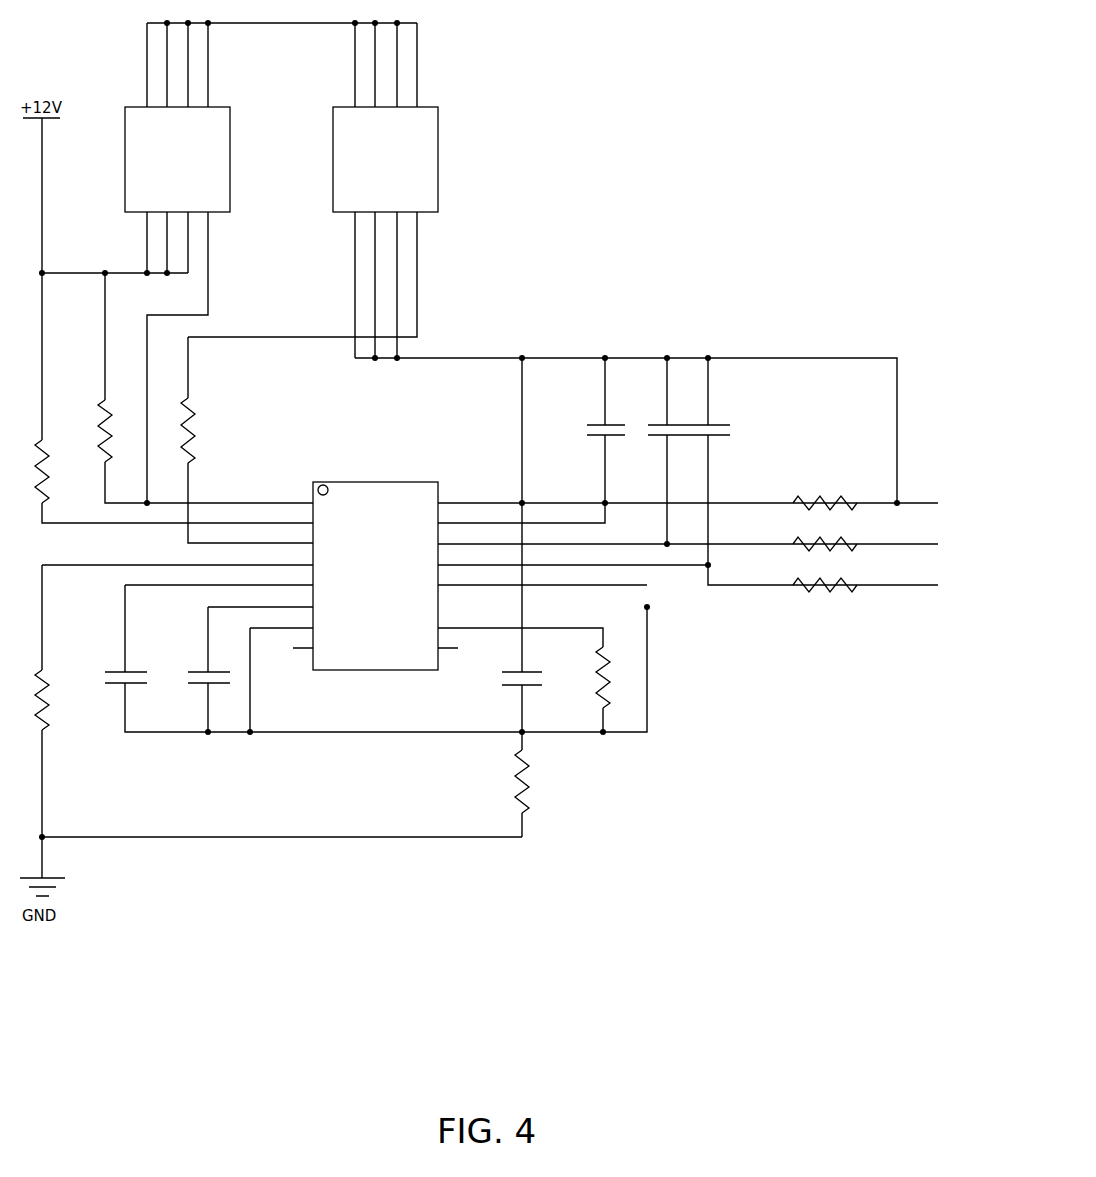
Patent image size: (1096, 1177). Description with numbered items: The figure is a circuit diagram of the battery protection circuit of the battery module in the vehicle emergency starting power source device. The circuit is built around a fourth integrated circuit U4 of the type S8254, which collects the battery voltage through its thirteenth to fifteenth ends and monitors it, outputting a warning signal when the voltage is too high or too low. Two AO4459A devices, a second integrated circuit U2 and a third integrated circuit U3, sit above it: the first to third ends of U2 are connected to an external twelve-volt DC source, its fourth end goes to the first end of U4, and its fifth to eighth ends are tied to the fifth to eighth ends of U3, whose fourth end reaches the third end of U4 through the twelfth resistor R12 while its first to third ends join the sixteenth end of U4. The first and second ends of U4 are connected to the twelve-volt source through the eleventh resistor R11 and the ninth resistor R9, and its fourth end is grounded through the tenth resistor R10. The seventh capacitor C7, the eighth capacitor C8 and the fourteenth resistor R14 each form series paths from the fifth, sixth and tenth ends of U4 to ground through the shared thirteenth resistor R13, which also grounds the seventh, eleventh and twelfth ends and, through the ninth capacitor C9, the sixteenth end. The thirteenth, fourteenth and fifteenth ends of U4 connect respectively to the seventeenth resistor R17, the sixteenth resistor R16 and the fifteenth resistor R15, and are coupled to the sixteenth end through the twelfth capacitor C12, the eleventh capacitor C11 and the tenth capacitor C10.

The second integrated circuit U2 is at (174, 151).
The third integrated circuit U3 is at (381, 151).
The fourth integrated circuit U4 is at (375, 566).
The ninth resistor R9 is at (51, 471).
The tenth resistor R10 is at (56, 700).
The eleventh resistor R11 is at (119, 431).
The twelfth resistor R12 is at (202, 430).
The thirteenth resistor R13 is at (539, 781).
The fourteenth resistor R14 is at (588, 677).
The fifteenth resistor R15 is at (825, 493).
The sixteenth resistor R16 is at (825, 535).
The seventeenth resistor R17 is at (825, 576).
The seventh capacitor C7 is at (126, 669).
The eighth capacitor C8 is at (209, 669).
The ninth capacitor C9 is at (522, 670).
The tenth capacitor C10 is at (610, 421).
The eleventh capacitor C11 is at (672, 421).
The twelfth capacitor C12 is at (713, 421).